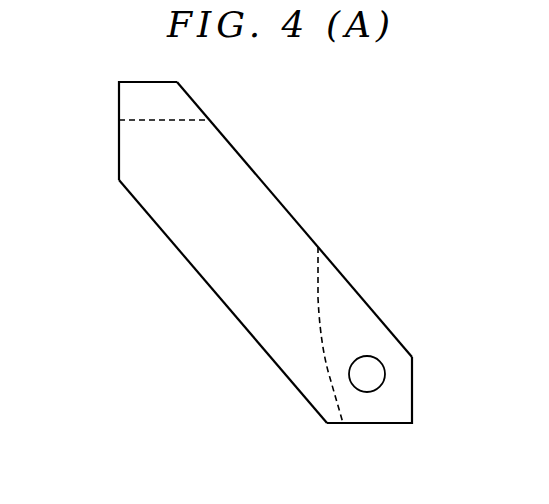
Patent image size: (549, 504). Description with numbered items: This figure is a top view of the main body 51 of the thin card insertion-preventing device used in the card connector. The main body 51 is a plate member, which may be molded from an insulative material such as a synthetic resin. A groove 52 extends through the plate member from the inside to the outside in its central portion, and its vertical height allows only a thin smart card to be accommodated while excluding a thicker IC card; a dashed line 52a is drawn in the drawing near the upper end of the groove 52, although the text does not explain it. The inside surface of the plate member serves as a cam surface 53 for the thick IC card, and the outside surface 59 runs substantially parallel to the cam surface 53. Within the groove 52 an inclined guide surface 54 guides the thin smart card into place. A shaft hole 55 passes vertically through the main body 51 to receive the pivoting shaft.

The main body 51 is at (360, 317).
The groove 52 is at (192, 208).
The fold line 52a is at (169, 121).
The cam surface 53 is at (228, 307).
The inclined guide surface 54 is at (330, 378).
The shaft hole 55 is at (373, 373).
The outside surface 59 is at (262, 180).